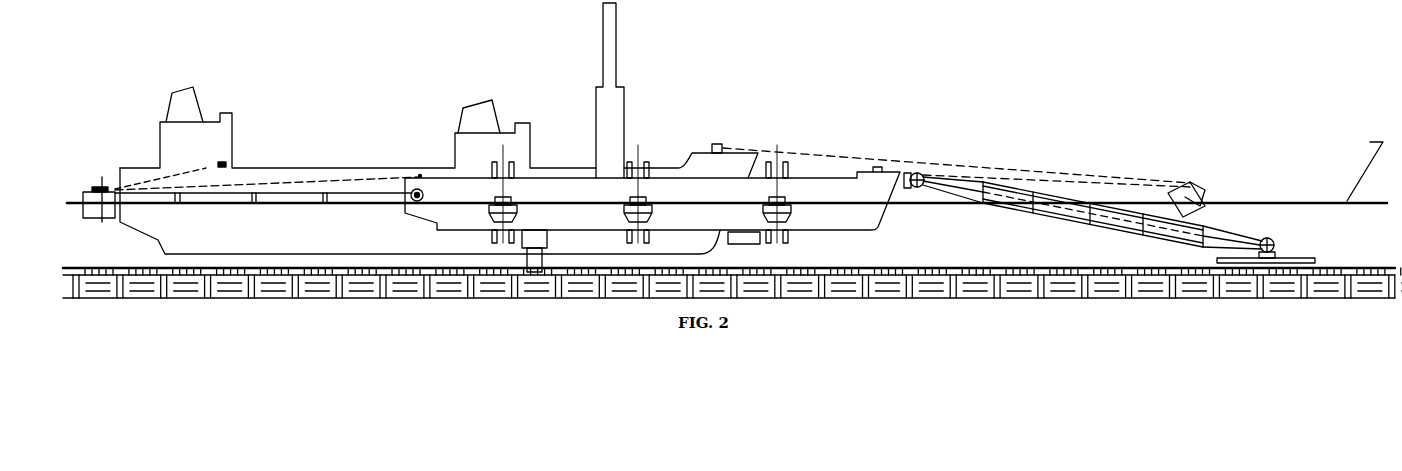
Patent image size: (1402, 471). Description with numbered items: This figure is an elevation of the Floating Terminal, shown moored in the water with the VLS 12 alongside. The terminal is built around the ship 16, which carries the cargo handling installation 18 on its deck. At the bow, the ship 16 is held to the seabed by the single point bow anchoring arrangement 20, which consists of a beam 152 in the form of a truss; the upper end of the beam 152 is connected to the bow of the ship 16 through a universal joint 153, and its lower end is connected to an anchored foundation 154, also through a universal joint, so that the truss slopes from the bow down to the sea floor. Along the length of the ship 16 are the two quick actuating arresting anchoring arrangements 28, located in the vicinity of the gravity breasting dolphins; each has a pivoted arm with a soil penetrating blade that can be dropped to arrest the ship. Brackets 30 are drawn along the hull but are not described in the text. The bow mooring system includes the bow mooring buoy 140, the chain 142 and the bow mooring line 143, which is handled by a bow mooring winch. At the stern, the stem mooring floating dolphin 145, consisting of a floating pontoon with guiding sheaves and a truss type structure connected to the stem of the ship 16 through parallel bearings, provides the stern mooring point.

The VLS 12 is at (690, 158).
The ship 16 is at (843, 225).
The cargo handling installation 18 is at (618, 102).
The single point bow anchoring arrangement 20 is at (1260, 192).
The quick actuating arresting anchoring arrangements 28 is at (744, 237).
The pipe support bracket 30 is at (512, 200).
The bow mooring buoy 140 is at (1200, 187).
The chain 142 is at (1241, 227).
The bow mooring line 143 is at (1274, 242).
The stem mooring floating dolphin 145 is at (321, 196).
The beam 152 is at (1084, 223).
The universal joint 153 is at (916, 188).
The anchored foundation 154 is at (1302, 258).